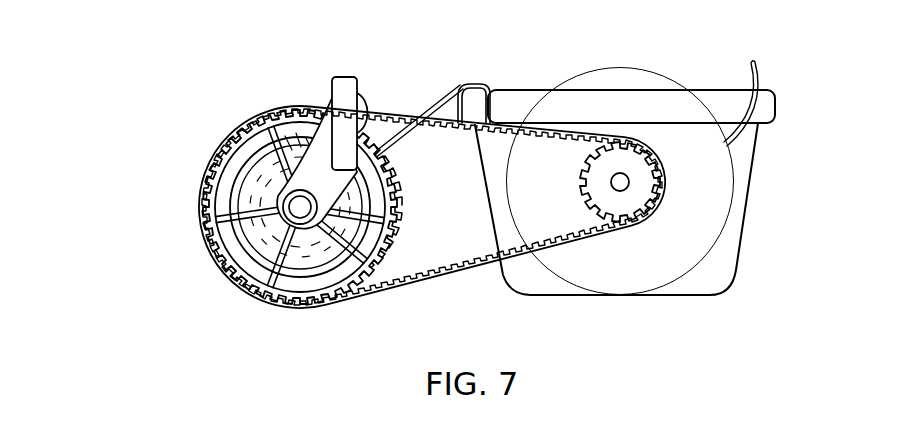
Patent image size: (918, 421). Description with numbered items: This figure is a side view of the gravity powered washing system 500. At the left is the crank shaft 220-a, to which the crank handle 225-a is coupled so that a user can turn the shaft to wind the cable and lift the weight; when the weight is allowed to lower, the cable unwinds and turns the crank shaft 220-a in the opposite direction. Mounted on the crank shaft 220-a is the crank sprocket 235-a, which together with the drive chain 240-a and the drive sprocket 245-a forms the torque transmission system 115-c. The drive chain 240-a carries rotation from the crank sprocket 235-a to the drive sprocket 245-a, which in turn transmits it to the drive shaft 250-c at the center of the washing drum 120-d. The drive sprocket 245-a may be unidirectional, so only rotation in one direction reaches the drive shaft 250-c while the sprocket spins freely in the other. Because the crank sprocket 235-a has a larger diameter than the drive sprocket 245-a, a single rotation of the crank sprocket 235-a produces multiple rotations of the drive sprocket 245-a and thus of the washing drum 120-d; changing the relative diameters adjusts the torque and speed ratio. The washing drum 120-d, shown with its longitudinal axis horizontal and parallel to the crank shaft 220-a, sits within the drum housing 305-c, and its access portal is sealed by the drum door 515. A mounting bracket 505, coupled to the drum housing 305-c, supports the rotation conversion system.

The gravity powered washing system 500 is at (112, 132).
The crank sprocket 235-a is at (240, 130).
The crank handle 225-a is at (357, 78).
The mounting bracket 505 is at (478, 82).
The drum door 515 is at (755, 63).
The drum housing 305-c is at (788, 102).
The washing drum 120-d is at (735, 185).
The crank shaft 220-a is at (299, 208).
The drive chain 240-a is at (393, 288).
The torque transmission system 115-c is at (455, 286).
The drive shaft 250-c is at (622, 185).
The drive sprocket 245-a is at (648, 193).